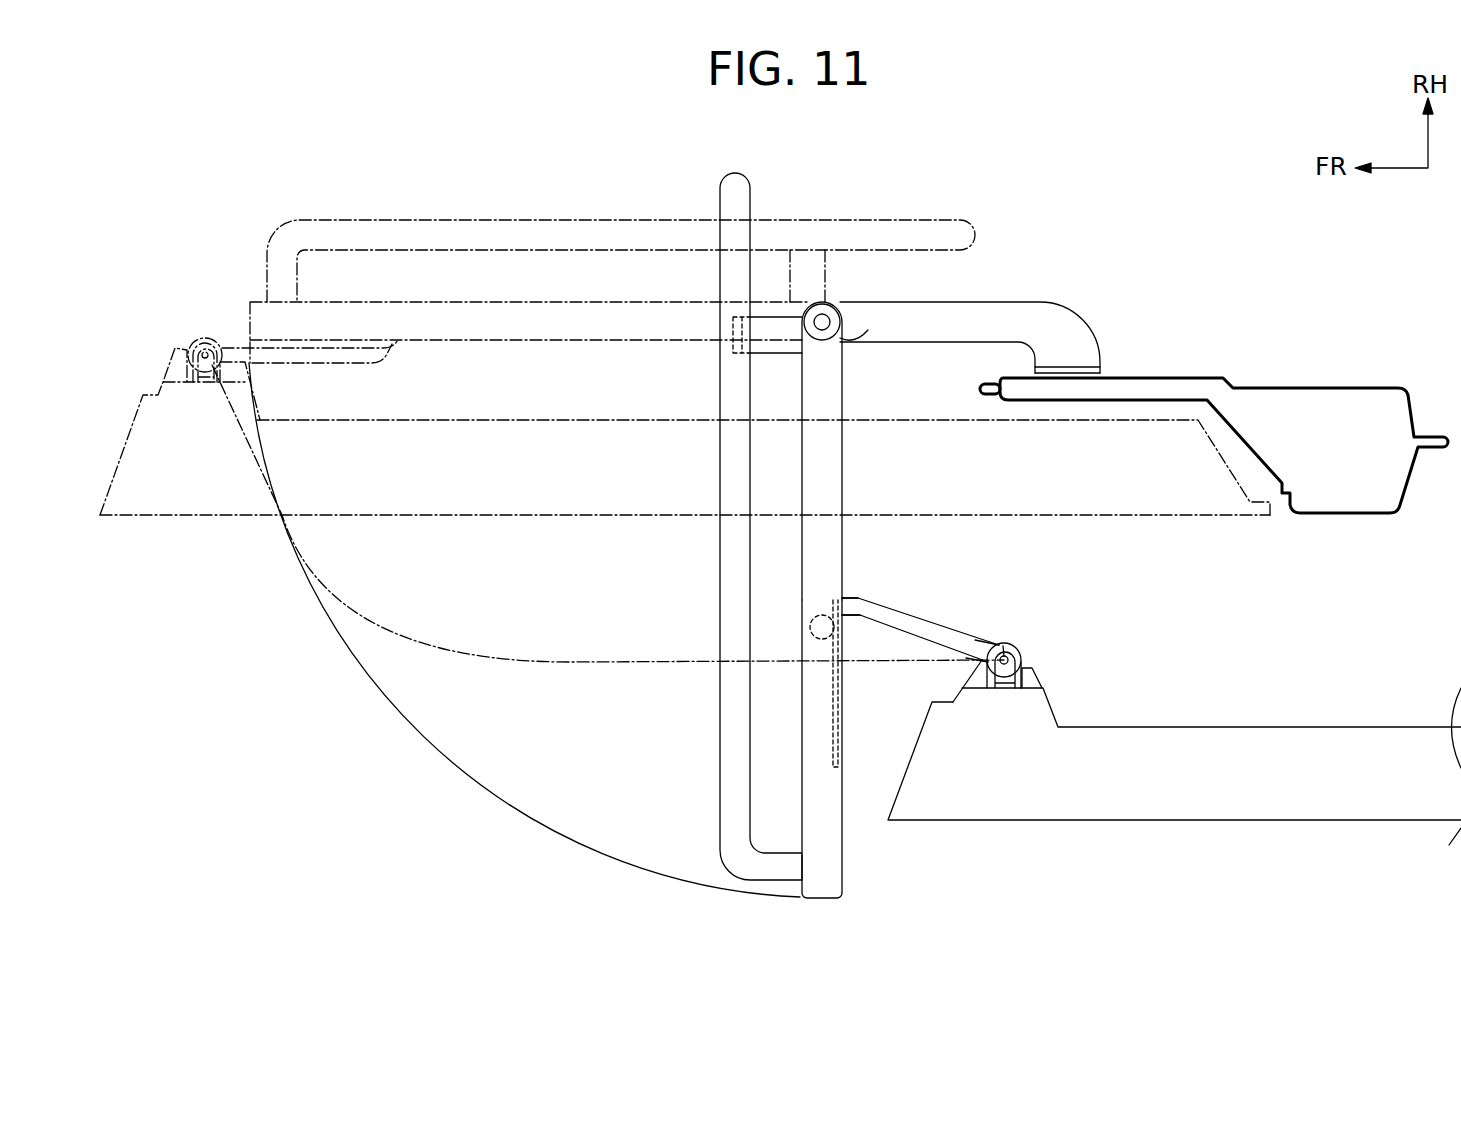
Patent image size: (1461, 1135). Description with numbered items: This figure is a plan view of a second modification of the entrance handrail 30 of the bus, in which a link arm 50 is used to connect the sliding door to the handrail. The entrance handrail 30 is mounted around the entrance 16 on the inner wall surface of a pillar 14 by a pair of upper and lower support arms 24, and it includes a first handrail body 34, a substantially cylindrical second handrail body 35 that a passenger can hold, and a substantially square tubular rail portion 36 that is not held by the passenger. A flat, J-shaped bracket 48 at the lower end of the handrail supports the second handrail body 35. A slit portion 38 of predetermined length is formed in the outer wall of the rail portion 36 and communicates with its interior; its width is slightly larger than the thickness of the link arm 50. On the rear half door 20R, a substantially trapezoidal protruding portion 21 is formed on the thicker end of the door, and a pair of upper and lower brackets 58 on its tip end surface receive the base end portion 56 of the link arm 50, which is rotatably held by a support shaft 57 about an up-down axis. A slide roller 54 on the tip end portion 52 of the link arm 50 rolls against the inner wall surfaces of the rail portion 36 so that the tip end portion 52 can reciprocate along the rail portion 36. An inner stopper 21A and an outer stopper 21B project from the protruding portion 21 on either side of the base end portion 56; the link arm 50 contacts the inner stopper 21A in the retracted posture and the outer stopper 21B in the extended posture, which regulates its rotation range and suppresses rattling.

The pillar 14 is at (1320, 388).
The entrance 16 is at (983, 397).
The rear half door 20R is at (1183, 822).
The protruding portion 21 is at (1057, 707).
The inner stopper 21A is at (1038, 672).
The outer stopper 21B is at (970, 690).
The support arm 24 is at (1058, 335).
The entrance handrail 30 is at (844, 897).
The first handrail body 34 is at (846, 845).
The second handrail body 35 is at (722, 568).
The rail portion 36 is at (846, 462).
The slit portion 38 is at (850, 735).
The bracket 48 is at (762, 333).
The link arm 50 is at (905, 613).
The tip end portion 52 is at (855, 598).
The slide roller 54 is at (810, 618).
The base end portion 56 is at (970, 636).
The support shaft 57 is at (1007, 657).
The bracket 58 is at (1022, 667).